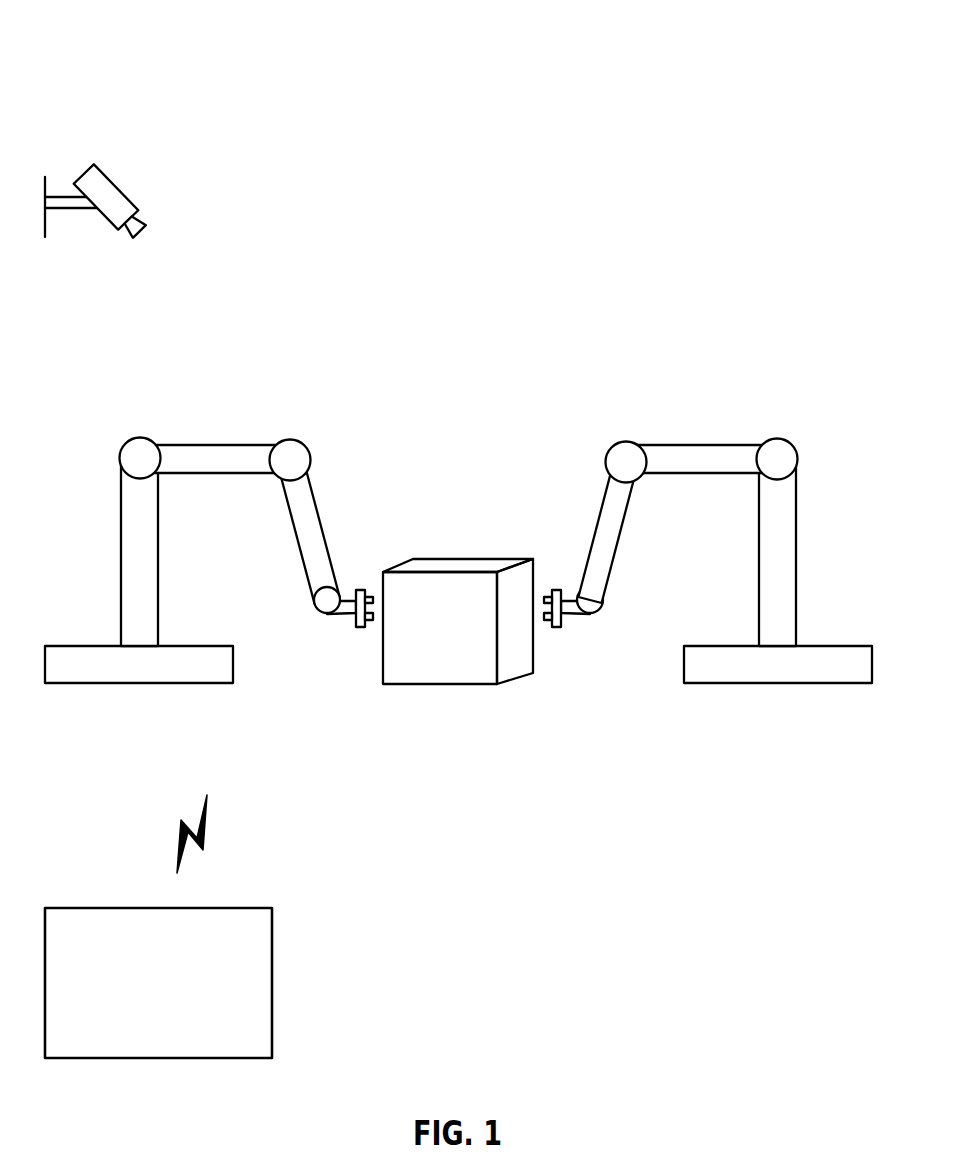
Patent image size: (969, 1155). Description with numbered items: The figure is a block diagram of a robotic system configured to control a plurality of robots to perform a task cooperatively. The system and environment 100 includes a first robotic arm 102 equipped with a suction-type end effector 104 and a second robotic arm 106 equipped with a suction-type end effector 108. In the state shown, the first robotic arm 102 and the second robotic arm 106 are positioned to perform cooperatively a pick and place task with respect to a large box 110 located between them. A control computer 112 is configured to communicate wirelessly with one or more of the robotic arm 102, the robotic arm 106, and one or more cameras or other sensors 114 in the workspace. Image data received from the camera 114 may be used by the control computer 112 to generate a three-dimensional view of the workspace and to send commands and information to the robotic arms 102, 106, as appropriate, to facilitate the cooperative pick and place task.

The system and environment 100 is at (133, 63).
The first robotic arm 102 is at (123, 555).
The suction-type end effector 104 is at (360, 630).
The second robotic arm 106 is at (798, 538).
The suction-type end effector 108 is at (555, 630).
The large box 110 is at (437, 568).
The control computer 112 is at (273, 960).
The camera 114 is at (118, 184).